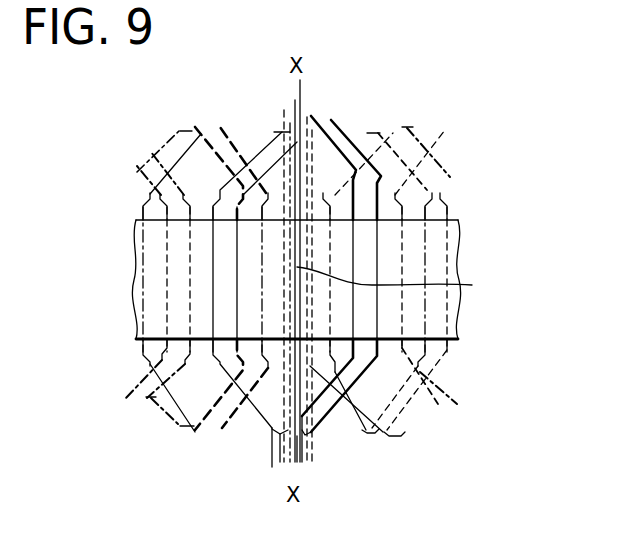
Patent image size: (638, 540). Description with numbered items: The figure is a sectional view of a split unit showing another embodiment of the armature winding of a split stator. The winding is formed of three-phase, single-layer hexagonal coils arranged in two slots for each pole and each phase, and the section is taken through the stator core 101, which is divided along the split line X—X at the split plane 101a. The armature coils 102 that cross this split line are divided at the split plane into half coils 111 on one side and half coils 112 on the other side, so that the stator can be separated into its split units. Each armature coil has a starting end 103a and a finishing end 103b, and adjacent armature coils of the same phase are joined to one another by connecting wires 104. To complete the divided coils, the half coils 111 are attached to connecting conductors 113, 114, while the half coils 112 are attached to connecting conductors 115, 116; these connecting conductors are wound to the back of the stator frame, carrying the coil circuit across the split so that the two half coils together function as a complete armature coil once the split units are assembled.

The stator core 101 is at (454, 224).
The split plane 101a is at (411, 285).
The armature coils 102 is at (183, 148).
The starting end 103a is at (298, 440).
The finishing end 103b is at (271, 450).
The connecting wires 104 is at (286, 468).
The half coil of one side 111 is at (337, 154).
The half coil of the other side 112 is at (267, 160).
The connecting conductor 113 is at (322, 131).
The connecting conductor 114 is at (311, 138).
The connecting conductor 115 is at (287, 136).
The connecting conductor 116 is at (273, 168).